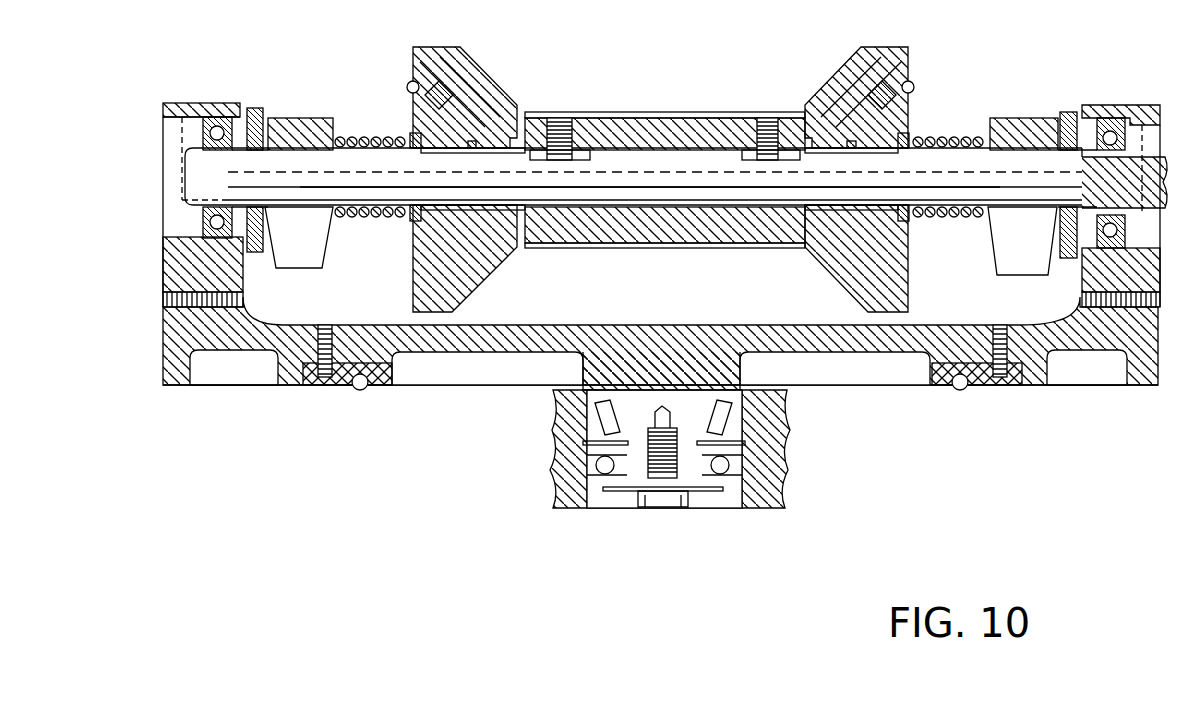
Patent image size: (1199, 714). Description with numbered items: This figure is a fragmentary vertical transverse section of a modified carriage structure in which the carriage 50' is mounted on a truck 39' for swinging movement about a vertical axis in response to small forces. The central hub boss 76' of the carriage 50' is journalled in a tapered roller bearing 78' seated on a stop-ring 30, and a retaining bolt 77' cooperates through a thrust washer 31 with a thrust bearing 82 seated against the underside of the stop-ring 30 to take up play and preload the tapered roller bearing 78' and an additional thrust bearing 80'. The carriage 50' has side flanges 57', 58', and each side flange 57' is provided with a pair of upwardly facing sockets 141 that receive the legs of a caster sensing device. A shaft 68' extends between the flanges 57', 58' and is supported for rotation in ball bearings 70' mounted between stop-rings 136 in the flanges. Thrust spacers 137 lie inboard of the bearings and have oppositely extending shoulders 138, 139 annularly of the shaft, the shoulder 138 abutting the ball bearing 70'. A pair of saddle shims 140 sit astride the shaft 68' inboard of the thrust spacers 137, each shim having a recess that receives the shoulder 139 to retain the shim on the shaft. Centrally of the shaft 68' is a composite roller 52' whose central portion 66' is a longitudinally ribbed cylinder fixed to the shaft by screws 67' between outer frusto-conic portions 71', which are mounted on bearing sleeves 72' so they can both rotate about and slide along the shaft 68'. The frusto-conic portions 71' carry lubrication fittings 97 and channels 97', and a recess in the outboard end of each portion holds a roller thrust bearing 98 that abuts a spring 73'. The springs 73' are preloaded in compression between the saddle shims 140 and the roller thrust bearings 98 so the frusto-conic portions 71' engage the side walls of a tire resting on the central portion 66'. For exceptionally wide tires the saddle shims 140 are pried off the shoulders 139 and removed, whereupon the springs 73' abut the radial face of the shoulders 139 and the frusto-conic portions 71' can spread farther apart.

The upwardly facing socket 141 is at (190, 105).
The stop-ring 136 is at (220, 115).
The thrust spacer 137 is at (258, 108).
The saddle shim 140 is at (278, 132).
The side flange 57' is at (178, 205).
The side flange 58' is at (1131, 187).
The ball bearing 70' is at (640, 178).
The shaft 68' is at (650, 170).
The spring 73' is at (663, 155).
The ball detent 97 is at (660, 76).
The channel 97' is at (688, 92).
The frusto-conic portion 71' is at (669, 163).
The screw 67' is at (665, 120).
The composite roller 52' is at (665, 157).
The central portion 66' is at (665, 159).
The bearing sleeve 72' is at (659, 175).
The roller thrust bearing 98 is at (405, 222).
The shoulder 138 is at (240, 140).
The shoulder 139 is at (292, 140).
The carriage 50' is at (660, 337).
The central hub boss 76' is at (636, 415).
The tapered roller bearing 78' is at (713, 406).
The truck 39' is at (706, 437).
The thrust bearing 82 is at (745, 462).
The stop-ring 30 is at (575, 432).
The thrust washer 31 is at (615, 492).
The retaining bolt 77' is at (669, 479).
The mounting screw 80' is at (662, 372).